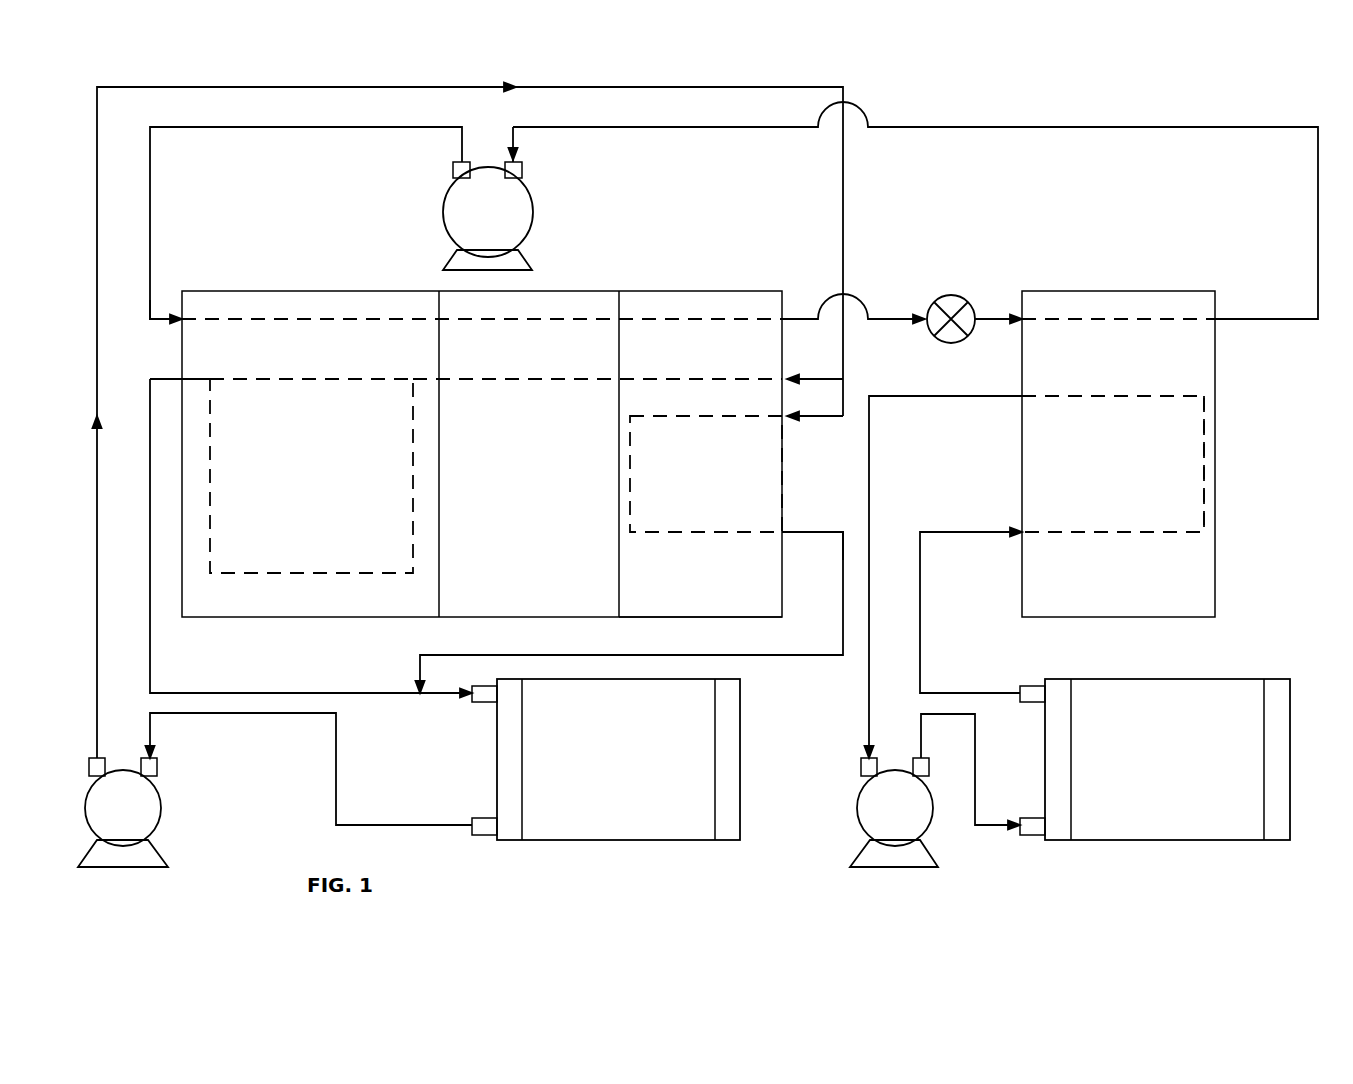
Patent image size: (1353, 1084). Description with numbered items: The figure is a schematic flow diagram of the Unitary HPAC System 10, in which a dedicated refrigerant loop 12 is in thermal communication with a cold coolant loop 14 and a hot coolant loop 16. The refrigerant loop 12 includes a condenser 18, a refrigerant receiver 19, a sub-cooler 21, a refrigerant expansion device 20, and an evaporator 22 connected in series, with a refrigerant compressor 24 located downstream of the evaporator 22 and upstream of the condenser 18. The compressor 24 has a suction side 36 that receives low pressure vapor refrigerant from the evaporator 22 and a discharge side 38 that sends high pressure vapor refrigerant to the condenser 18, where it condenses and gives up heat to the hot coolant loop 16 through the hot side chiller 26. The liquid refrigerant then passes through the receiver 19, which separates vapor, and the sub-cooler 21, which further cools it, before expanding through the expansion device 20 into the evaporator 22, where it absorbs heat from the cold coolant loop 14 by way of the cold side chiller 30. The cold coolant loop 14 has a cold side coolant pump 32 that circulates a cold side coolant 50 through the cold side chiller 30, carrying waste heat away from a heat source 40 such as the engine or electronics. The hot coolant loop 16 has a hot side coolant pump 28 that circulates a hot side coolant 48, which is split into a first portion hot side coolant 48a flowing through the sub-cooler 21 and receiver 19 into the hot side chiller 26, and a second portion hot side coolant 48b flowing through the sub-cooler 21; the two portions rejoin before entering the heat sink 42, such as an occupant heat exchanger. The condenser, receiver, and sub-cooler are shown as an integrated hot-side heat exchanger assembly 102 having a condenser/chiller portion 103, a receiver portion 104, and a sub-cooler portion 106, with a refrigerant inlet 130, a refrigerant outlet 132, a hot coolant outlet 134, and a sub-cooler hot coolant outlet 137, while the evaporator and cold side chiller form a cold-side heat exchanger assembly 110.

The Unitary HPAC System 10 is at (1068, 107).
The refrigerant loop 12 is at (1182, 125).
The cold coolant loop 14 is at (985, 826).
The hot coolant loop 16 is at (447, 826).
The condenser 18 is at (283, 345).
The refrigerant receiver 19 is at (552, 297).
The refrigerant expansion device 20 is at (958, 291).
The sub-cooler 21 is at (653, 298).
The evaporator 22 is at (1202, 355).
The refrigerant compressor 24 is at (508, 213).
The hot side chiller 26 is at (320, 305).
The hot side coolant pump 28 is at (137, 805).
The cold side chiller 30 is at (1208, 572).
The cold side coolant pump 32 is at (868, 807).
The suction side 36 is at (522, 165).
The discharge side 38 is at (455, 165).
The heat source 40 is at (1218, 685).
The heat sink 42 is at (670, 828).
The hot side coolant 48 is at (845, 200).
The first portion hot side coolant 48a is at (813, 378).
The second portion hot side coolant 48b is at (825, 416).
The cold side coolant 50 is at (920, 632).
The integrated hot-side heat exchanger assembly 102 is at (277, 625).
The condenser/chiller portion 103 is at (385, 612).
The receiver portion 104 is at (508, 608).
The sub-cooler portion 106 is at (722, 607).
The cold-side heat exchanger assembly 110 is at (1228, 430).
The refrigerant inlet 130 is at (160, 316).
The refrigerant outlet 132 is at (795, 317).
The hot coolant outlet 134 is at (162, 375).
The sub-cooler hot coolant outlet 137 is at (805, 530).